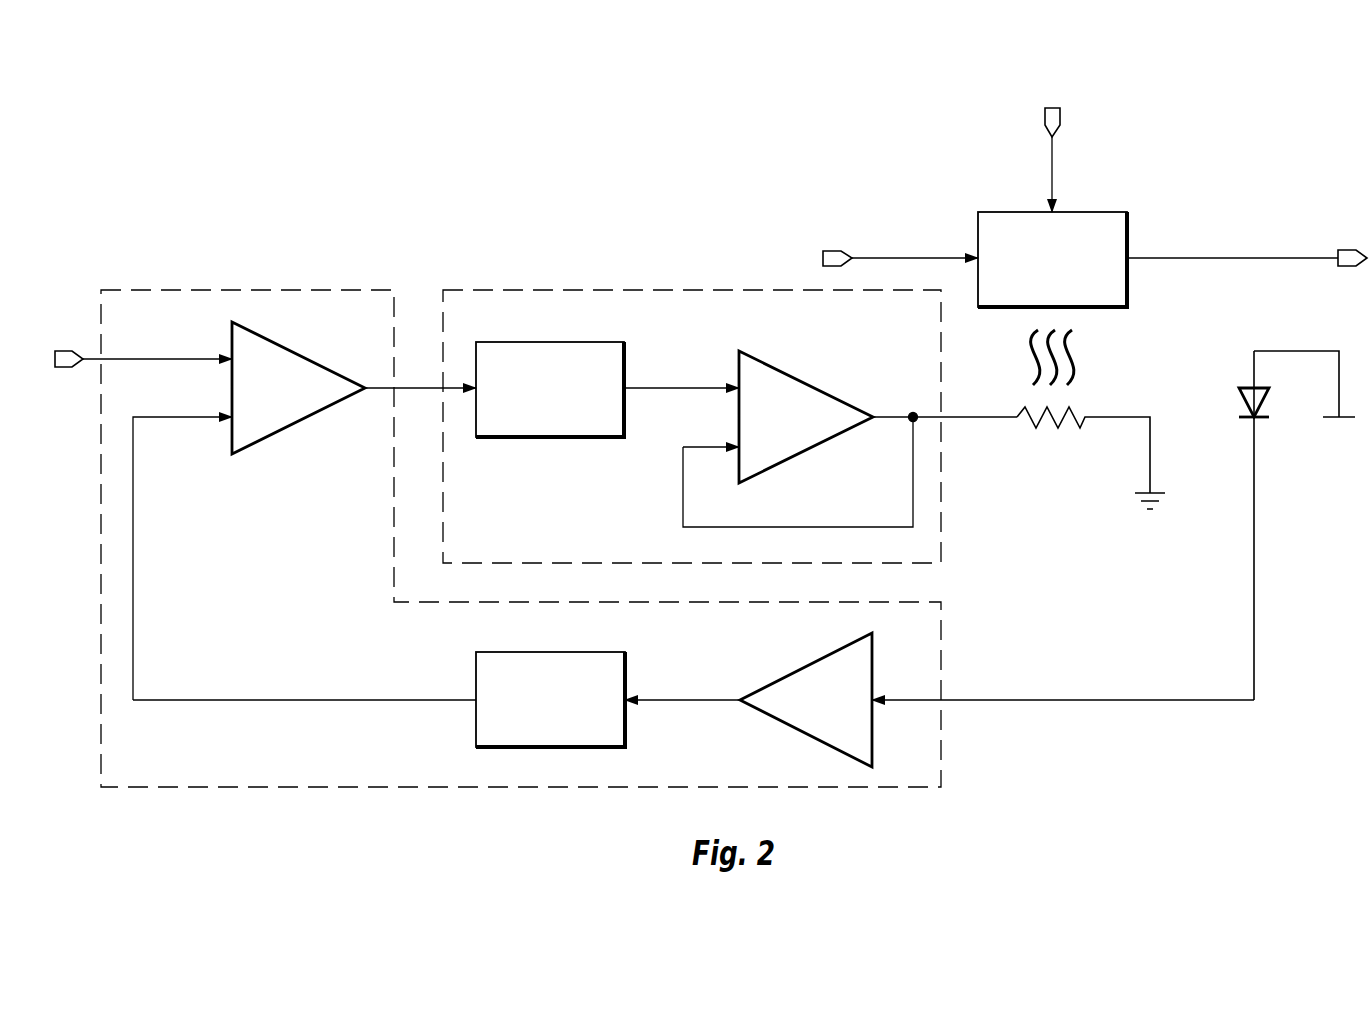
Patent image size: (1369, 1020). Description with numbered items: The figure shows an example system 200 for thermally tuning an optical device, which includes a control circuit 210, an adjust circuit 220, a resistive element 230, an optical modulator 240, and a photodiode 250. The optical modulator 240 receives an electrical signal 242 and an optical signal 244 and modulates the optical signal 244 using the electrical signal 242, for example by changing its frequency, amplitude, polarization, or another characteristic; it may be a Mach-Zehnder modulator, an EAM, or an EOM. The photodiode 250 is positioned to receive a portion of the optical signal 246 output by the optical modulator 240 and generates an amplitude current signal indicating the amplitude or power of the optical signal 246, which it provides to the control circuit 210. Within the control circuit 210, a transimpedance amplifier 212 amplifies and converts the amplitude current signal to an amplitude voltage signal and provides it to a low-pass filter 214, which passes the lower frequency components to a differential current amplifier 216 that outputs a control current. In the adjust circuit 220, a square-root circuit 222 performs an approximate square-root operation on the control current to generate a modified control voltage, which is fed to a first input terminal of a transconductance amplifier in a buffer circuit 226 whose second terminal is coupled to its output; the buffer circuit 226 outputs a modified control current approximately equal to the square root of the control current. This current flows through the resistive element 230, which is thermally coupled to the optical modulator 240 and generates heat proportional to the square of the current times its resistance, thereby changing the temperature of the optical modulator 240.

The system 200 is at (150, 118).
The control circuit 210 is at (228, 290).
The transimpedance amplifier 212 is at (805, 713).
The low-pass filter 214 is at (531, 713).
The differential current amplifier 216 is at (273, 401).
The adjust circuit 220 is at (497, 290).
The square-root circuit 222 is at (531, 402).
The buffer circuit 226 is at (812, 362).
The resistive element 230 is at (1040, 428).
The optical modulator 240 is at (1033, 273).
The electrical signal 242 is at (908, 258).
The optical signal 244 is at (1052, 163).
The optical signal output 246 is at (1200, 258).
The photodiode 250 is at (1258, 420).